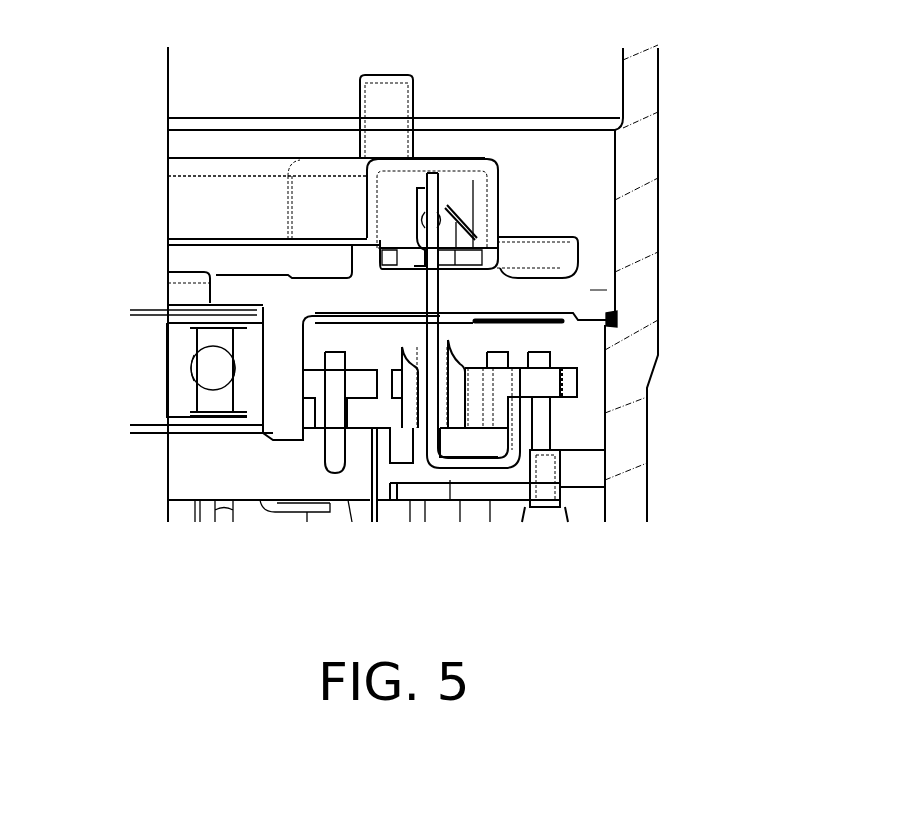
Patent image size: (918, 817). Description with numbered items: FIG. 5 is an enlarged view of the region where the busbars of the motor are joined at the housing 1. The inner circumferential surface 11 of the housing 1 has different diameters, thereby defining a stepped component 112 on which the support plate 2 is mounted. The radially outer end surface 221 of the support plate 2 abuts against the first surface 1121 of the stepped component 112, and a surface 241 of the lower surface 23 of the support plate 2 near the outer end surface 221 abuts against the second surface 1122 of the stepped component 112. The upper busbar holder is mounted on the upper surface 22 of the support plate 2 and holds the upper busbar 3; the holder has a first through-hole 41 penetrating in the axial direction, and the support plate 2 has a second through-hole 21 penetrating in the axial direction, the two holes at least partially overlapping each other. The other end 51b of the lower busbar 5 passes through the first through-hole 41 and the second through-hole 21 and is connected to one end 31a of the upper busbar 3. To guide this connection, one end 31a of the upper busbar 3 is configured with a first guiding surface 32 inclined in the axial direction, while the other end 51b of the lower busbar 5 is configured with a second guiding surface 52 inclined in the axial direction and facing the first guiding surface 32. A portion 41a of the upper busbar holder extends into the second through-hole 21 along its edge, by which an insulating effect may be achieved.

The housing 1 is at (641, 147).
The inner circumferential surface 11 is at (616, 193).
The support plate 2 is at (605, 248).
The first surface 1121 is at (616, 275).
The stepped component 112 is at (608, 320).
The second surface 1122 is at (617, 318).
The upper surface 22 is at (578, 237).
The radially outer end surface 221 is at (606, 289).
The upper busbar 3 is at (388, 236).
The one end of the upper busbar 31a is at (412, 204).
The other end of the lower busbar 51b is at (427, 196).
The second guiding surface 52 is at (427, 178).
The lower busbar 5 is at (419, 339).
The first through-hole 41 is at (412, 237).
The portion of the upper busbar holder 41a is at (401, 274).
The first guiding surface 32 is at (412, 262).
The second through-hole 21 is at (401, 305).
The lower surface 23 is at (607, 325).
The surface of the lower surface 241 is at (615, 325).